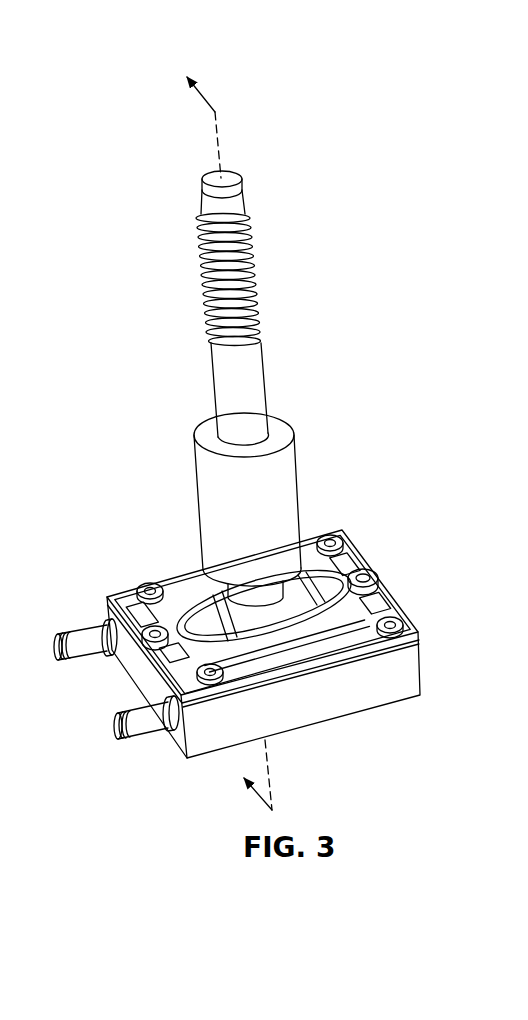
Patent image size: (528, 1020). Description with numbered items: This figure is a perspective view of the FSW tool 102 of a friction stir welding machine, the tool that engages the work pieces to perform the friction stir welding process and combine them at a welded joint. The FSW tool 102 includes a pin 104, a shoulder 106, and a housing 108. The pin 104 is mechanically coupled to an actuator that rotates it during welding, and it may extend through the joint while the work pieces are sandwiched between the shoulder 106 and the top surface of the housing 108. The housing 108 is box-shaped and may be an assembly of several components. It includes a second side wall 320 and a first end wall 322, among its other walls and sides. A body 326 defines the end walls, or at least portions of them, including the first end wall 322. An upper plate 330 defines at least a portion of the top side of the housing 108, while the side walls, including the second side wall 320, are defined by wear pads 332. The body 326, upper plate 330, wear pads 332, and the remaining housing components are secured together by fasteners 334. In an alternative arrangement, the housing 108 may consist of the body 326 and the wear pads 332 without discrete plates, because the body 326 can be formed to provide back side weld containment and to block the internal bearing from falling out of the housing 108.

The FSW tool 102 is at (66, 177).
The pin 104 is at (208, 345).
The shoulder 106 is at (193, 477).
The housing 108 is at (360, 552).
The second side wall 320 is at (332, 692).
The first end wall 322 is at (142, 667).
The body 326 is at (139, 619).
The upper plate 330 is at (172, 615).
The wear pads 332 is at (372, 673).
The fasteners 334 is at (373, 568).